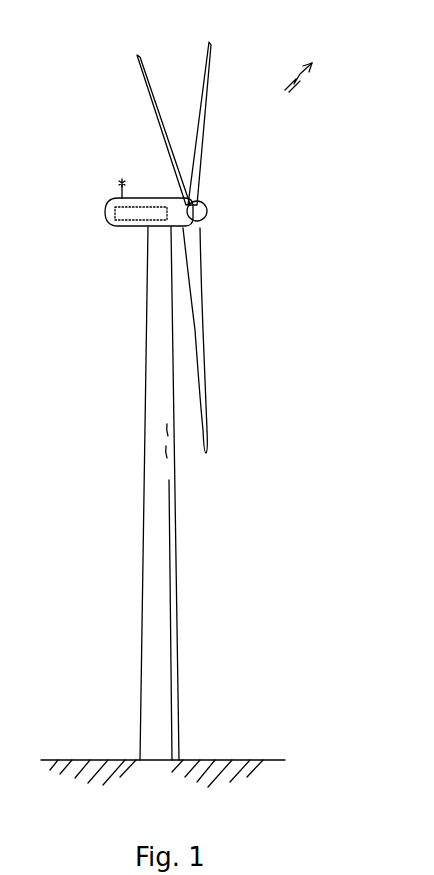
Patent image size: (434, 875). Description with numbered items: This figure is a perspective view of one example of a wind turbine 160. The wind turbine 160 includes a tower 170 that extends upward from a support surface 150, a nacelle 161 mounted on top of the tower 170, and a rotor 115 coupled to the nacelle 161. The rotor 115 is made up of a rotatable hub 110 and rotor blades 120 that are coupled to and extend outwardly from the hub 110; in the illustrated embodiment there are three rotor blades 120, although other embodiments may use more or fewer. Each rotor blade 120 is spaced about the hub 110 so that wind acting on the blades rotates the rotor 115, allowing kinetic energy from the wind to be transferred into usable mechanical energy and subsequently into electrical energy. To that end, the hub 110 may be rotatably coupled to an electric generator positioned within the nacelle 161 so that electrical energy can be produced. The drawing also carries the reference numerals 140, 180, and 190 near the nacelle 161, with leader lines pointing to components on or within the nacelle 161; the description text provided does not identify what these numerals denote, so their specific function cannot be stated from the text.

The hub 110 is at (207, 211).
The rotor 115 is at (212, 193).
The rotor blade 120 is at (203, 70).
The controller 140 is at (128, 217).
The support surface 150 is at (92, 759).
The wind turbine 160 is at (320, 73).
The nacelle 161 is at (128, 227).
The tower 170 is at (150, 566).
The generator 180 is at (163, 218).
The gearbox 190 is at (148, 218).